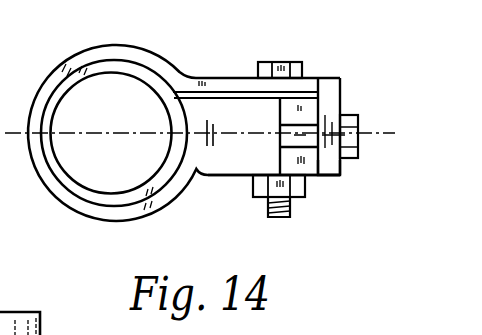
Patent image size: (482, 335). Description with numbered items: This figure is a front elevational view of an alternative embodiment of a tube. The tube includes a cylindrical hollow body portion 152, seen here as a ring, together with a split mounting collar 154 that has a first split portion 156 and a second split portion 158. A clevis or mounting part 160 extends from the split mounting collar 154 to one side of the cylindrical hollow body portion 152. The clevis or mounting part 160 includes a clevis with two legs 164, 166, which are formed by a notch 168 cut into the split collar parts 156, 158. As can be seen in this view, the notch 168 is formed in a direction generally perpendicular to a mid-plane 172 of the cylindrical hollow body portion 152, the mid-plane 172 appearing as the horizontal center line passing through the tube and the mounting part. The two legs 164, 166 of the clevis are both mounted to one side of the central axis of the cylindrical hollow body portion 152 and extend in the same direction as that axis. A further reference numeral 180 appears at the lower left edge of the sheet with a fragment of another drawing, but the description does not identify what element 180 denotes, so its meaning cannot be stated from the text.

The cylindrical hollow body portion 152 is at (97, 68).
The split mounting collar 154 is at (72, 63).
The first split portion 156 is at (231, 84).
The second split portion 158 is at (213, 163).
The clevis or mounting part 160 is at (342, 100).
The leg 164 is at (328, 168).
The leg 166 is at (232, 178).
The notch 168 is at (288, 110).
The mid-plane 172 is at (375, 120).
The bracket 180 is at (0, 302).